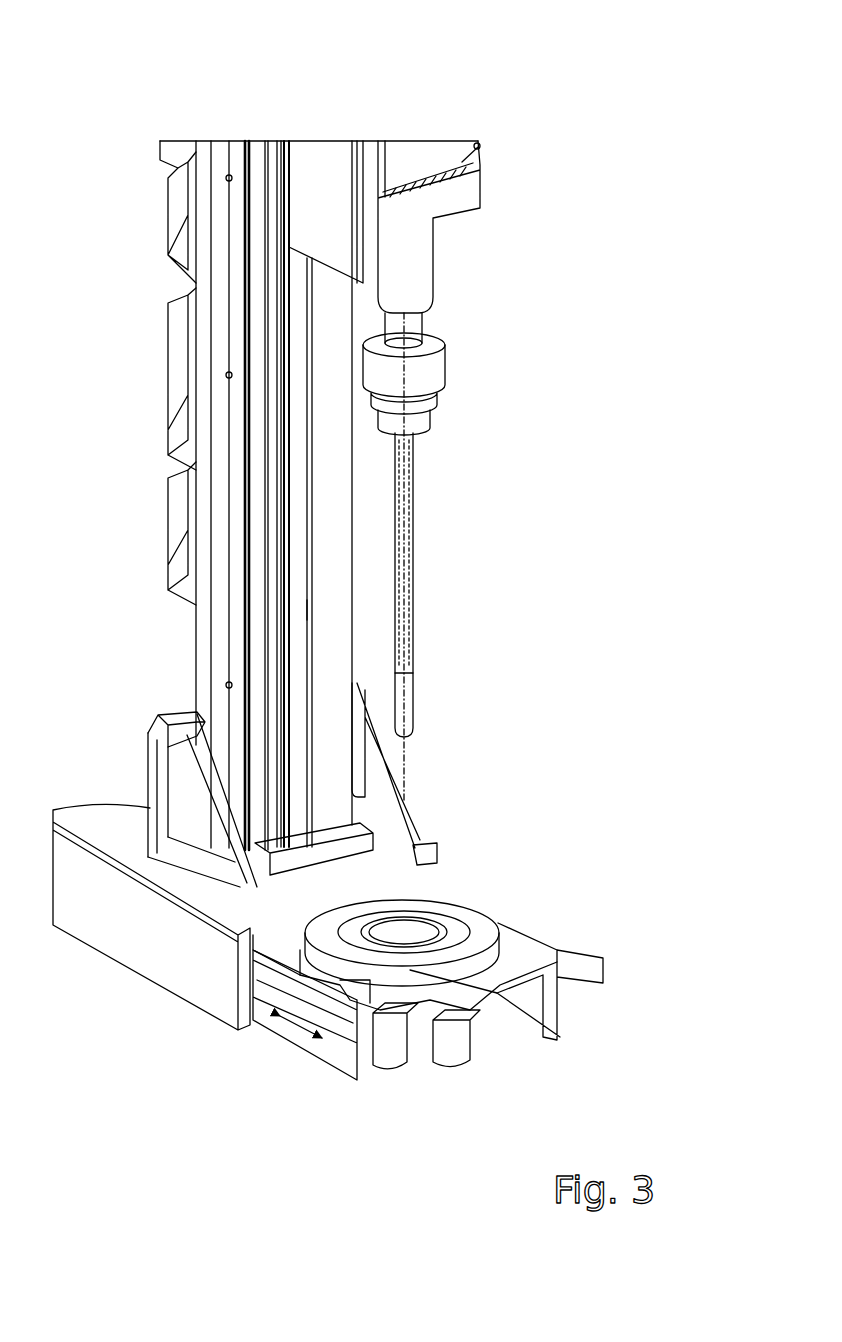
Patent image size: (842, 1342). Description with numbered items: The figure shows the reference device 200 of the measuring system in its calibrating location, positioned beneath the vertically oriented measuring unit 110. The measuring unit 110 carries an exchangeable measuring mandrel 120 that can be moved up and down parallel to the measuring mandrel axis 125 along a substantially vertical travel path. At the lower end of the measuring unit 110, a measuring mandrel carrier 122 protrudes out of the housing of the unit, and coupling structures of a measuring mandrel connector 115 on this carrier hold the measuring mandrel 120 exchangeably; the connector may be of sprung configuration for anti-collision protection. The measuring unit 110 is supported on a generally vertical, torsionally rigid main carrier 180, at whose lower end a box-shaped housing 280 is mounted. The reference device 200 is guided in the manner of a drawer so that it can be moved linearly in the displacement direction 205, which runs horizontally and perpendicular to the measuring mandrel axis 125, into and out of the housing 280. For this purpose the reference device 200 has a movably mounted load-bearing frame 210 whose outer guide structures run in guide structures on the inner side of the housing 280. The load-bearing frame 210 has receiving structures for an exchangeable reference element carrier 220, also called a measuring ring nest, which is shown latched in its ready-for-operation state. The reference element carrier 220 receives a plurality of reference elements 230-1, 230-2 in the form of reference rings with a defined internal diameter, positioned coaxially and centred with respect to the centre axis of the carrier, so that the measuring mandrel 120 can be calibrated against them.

The measuring unit 110 is at (463, 114).
The measuring mandrel connector 115 is at (440, 408).
The measuring mandrel 120 is at (405, 593).
The measuring mandrel carrier 122 is at (412, 323).
The measuring mandrel axis 125 is at (403, 497).
The main carrier 180 is at (342, 646).
The reference device 200 is at (441, 976).
The displacement direction 205 is at (300, 1030).
The load-bearing frame 210 is at (513, 930).
The reference element carrier 220 is at (480, 930).
The reference element 230-1 is at (423, 1017).
The reference element 230-2 is at (427, 1053).
The housing 280 is at (103, 938).